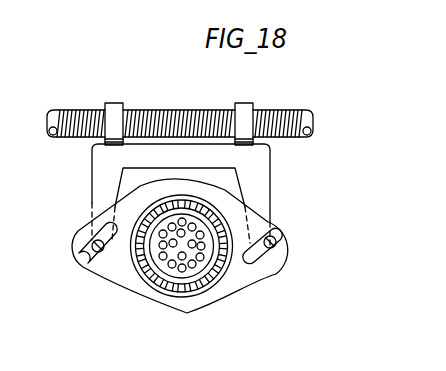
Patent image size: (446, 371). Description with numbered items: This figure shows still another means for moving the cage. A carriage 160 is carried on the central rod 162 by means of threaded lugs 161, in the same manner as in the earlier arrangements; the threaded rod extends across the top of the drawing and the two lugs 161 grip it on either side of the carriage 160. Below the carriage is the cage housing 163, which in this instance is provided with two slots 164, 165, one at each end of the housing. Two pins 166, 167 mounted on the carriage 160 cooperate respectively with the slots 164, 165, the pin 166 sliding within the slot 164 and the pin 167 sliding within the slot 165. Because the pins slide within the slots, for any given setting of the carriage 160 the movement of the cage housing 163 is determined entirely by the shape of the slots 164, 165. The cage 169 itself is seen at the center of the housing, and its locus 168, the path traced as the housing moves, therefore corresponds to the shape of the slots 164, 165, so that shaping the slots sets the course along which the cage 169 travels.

The carriage 160 is at (268, 177).
The threaded lugs 161 is at (129, 86).
The central rod 162 is at (195, 118).
The cage housing 163 is at (240, 283).
The slot 164 is at (85, 264).
The slot 165 is at (285, 240).
The pin 166 is at (100, 253).
The pin 167 is at (271, 249).
The locus 168 is at (185, 241).
The cage 169 is at (197, 240).